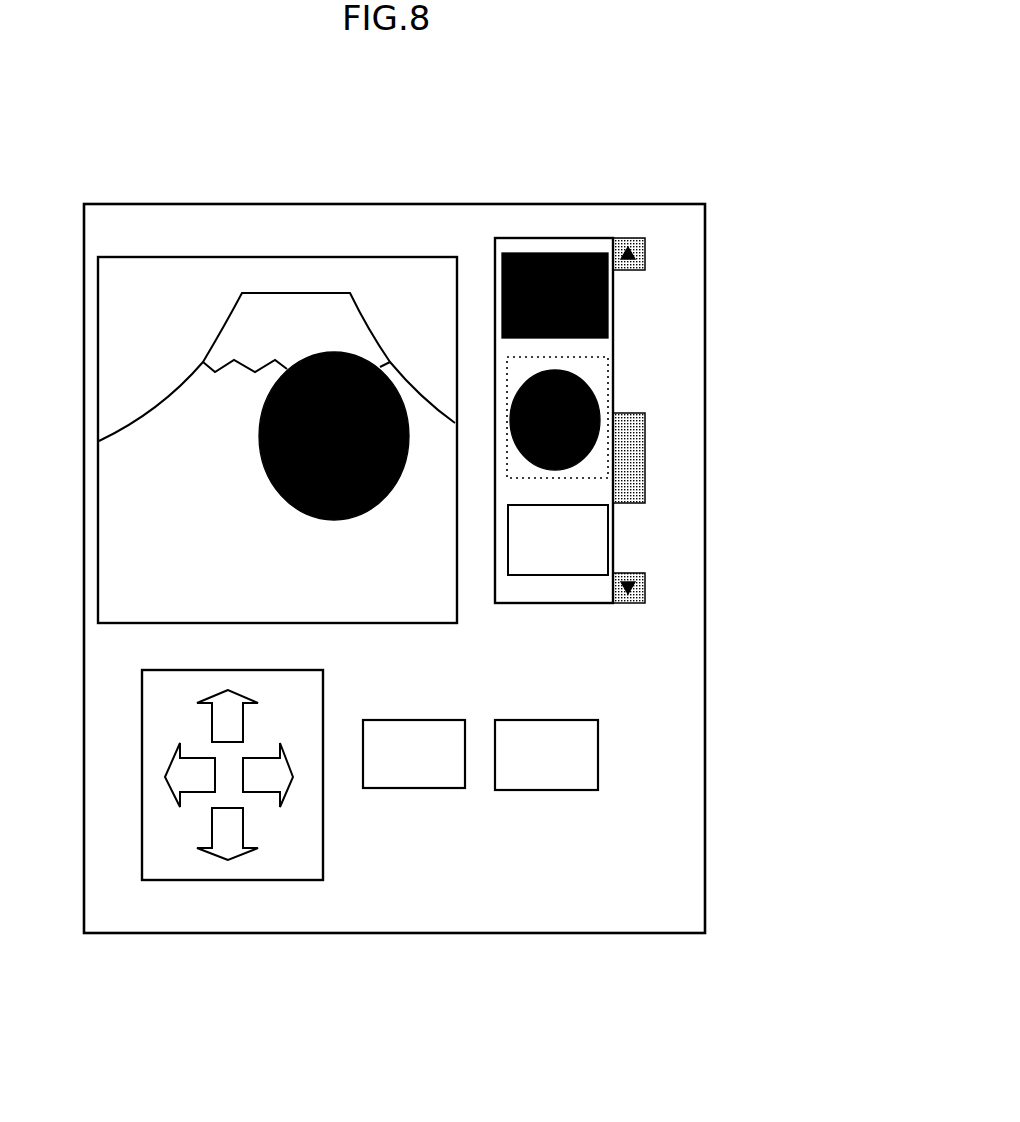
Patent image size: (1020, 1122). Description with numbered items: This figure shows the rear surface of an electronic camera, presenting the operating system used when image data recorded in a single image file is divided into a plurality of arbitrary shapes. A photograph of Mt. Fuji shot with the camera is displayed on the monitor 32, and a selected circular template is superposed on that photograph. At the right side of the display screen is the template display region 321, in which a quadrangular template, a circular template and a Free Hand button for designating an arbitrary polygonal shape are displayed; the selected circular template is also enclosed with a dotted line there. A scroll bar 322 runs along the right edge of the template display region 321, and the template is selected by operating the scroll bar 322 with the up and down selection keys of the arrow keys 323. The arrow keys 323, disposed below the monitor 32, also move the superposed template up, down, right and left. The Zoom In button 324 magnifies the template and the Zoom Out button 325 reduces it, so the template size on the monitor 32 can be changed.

The monitor 32 is at (360, 257).
The template display region 321 is at (573, 238).
The scroll bar 322 is at (643, 338).
The arrow keys 323 is at (220, 880).
The Zoom In button 324 is at (418, 788).
The Zoom Out button 325 is at (552, 790).